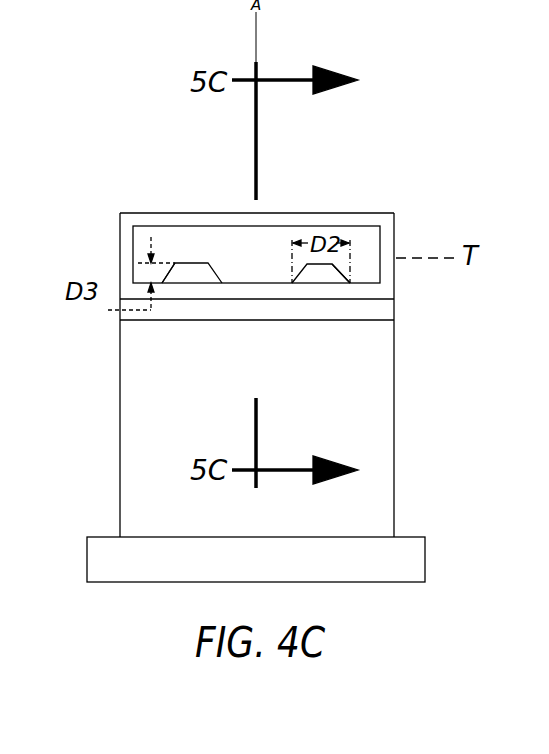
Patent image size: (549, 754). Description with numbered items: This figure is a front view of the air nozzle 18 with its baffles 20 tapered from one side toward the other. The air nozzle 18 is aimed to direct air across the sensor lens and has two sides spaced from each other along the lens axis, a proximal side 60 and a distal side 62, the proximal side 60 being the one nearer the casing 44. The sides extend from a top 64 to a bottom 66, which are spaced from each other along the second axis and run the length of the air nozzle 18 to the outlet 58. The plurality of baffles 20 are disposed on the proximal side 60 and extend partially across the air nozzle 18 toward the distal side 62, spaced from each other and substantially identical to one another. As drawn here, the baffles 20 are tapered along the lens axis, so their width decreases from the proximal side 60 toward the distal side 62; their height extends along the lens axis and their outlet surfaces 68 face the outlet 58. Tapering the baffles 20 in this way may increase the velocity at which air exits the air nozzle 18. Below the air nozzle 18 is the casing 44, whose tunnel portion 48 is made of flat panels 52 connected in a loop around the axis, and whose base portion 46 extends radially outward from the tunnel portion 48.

The air nozzle 18 is at (358, 198).
The baffles 20 is at (190, 263).
The casing 44 is at (106, 378).
The base portion 46 is at (413, 537).
The tunnel portion 48 is at (408, 378).
The flat panels 52 is at (191, 408).
The outlet 58 is at (246, 268).
The proximal side 60 is at (273, 288).
The distal side 62 is at (283, 213).
The top 64 is at (394, 228).
The bottom 66 is at (120, 226).
The outlet surfaces 68 is at (198, 270).